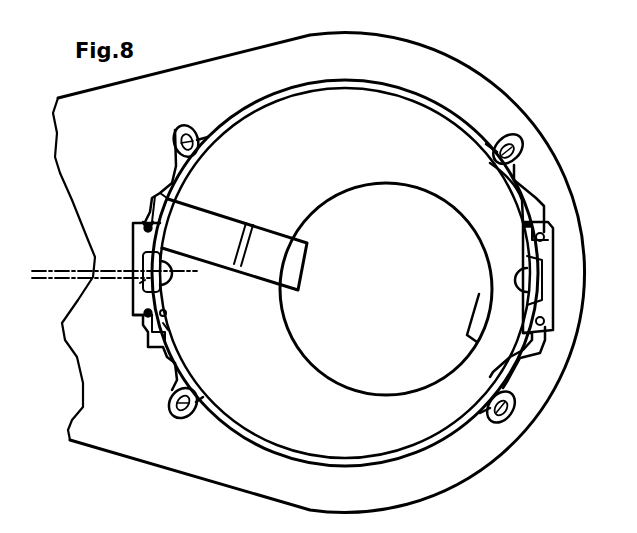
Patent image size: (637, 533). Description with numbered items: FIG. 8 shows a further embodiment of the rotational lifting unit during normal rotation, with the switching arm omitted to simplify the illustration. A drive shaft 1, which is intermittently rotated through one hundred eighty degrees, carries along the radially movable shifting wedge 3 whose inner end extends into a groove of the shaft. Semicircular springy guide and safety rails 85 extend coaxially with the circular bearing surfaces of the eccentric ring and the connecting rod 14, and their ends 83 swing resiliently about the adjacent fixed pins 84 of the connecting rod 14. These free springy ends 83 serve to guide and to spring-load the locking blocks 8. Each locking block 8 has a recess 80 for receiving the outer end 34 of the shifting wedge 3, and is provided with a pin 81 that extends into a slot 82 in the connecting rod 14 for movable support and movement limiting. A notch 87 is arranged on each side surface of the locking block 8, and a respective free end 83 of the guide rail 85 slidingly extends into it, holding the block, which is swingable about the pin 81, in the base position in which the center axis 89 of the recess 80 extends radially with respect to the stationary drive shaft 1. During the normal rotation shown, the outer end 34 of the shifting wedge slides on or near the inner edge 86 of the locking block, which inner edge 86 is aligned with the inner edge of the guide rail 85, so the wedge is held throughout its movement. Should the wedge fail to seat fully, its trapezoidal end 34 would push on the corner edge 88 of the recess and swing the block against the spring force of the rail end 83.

The drive shaft 1 is at (420, 358).
The shifting wedge 3 is at (275, 245).
The locking block 8 is at (543, 248).
The connecting rod 14 is at (495, 103).
The outer end of the shifting wedge 34 is at (177, 218).
The recess 80 is at (148, 259).
The pin 81 is at (172, 279).
The slot 82 is at (140, 283).
The end of the guide rail 83 is at (175, 182).
The fixed pin 84 is at (191, 127).
The guide and safety rail 85 is at (430, 108).
The inner edge of the locking block 86 is at (148, 218).
The notch 87 is at (145, 226).
The corner edge of the recess 88 is at (152, 250).
The center axis of the recess 89 is at (48, 278).